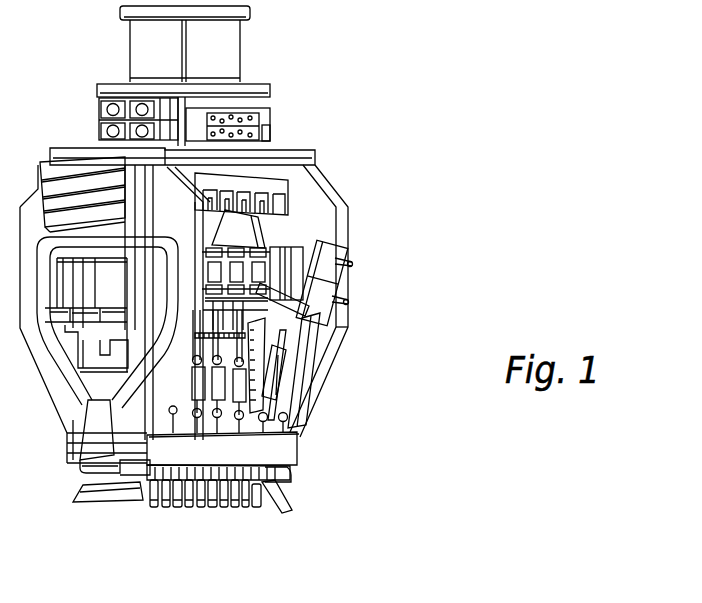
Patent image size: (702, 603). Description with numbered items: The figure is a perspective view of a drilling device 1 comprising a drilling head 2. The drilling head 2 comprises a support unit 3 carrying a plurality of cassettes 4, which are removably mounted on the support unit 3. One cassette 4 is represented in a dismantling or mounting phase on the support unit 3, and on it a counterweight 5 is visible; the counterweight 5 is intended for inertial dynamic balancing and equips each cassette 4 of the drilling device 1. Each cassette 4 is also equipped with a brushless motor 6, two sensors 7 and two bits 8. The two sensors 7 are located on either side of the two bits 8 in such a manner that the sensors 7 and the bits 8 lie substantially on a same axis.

The drilling device 1 is at (263, 65).
The drilling head 2 is at (310, 423).
The support unit 3 is at (347, 219).
The cassette 4 is at (293, 337).
The counterweight 5 is at (270, 234).
The brushless motor 6 is at (333, 246).
The sensor 7 is at (262, 503).
The bit 8 is at (226, 508).